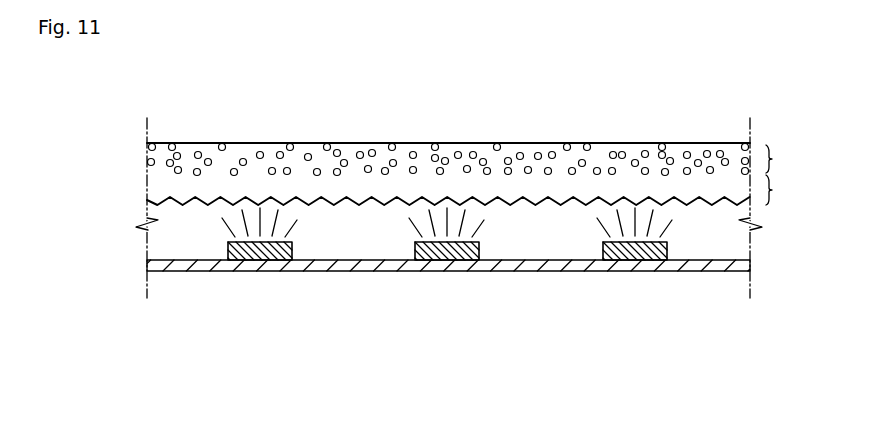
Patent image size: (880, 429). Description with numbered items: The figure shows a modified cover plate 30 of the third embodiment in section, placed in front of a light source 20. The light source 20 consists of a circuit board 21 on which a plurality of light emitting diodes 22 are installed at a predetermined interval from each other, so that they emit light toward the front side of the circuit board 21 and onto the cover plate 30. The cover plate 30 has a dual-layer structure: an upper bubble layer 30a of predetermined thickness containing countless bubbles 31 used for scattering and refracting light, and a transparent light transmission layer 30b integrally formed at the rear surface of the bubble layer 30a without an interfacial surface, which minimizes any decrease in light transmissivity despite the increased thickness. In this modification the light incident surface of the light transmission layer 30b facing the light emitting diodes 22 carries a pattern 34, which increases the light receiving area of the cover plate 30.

The light source 20 is at (448, 290).
The circuit board 21 is at (538, 267).
The light emitting diode 22 is at (546, 323).
The cover plate 30 is at (453, 154).
The bubble layer 30a is at (788, 159).
The light transmission layer 30b is at (788, 190).
The bubbles 31 is at (613, 150).
The pattern 34 is at (147, 202).